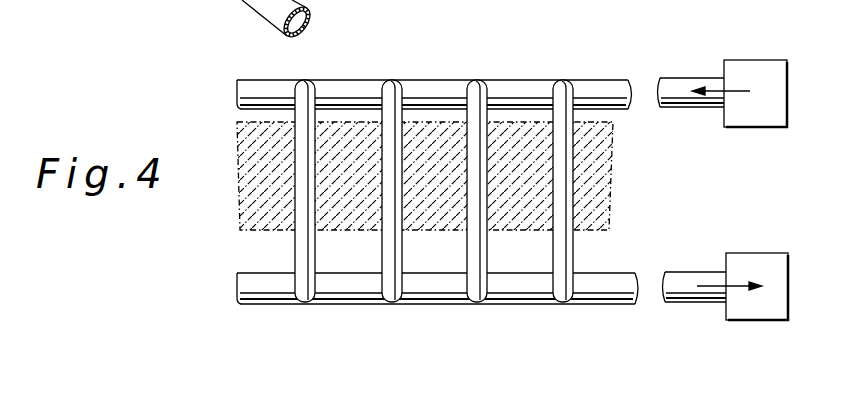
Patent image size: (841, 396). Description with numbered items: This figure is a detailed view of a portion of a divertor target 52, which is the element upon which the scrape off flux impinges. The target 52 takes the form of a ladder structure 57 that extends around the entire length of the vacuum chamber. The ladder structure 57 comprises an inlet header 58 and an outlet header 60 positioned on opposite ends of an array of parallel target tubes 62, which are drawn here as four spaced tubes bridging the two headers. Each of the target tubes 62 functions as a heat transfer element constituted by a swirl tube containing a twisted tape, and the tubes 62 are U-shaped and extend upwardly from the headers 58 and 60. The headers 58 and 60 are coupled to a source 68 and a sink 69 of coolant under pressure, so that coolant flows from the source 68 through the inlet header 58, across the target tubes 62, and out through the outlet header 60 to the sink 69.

The divertor target 52 is at (425, 115).
The ladder structure 57 is at (437, 73).
The inlet header 58 is at (667, 77).
The outlet header 60 is at (676, 302).
The target tubes 62 is at (296, 248).
The source of coolant 68 is at (736, 61).
The sink of coolant 69 is at (745, 316).